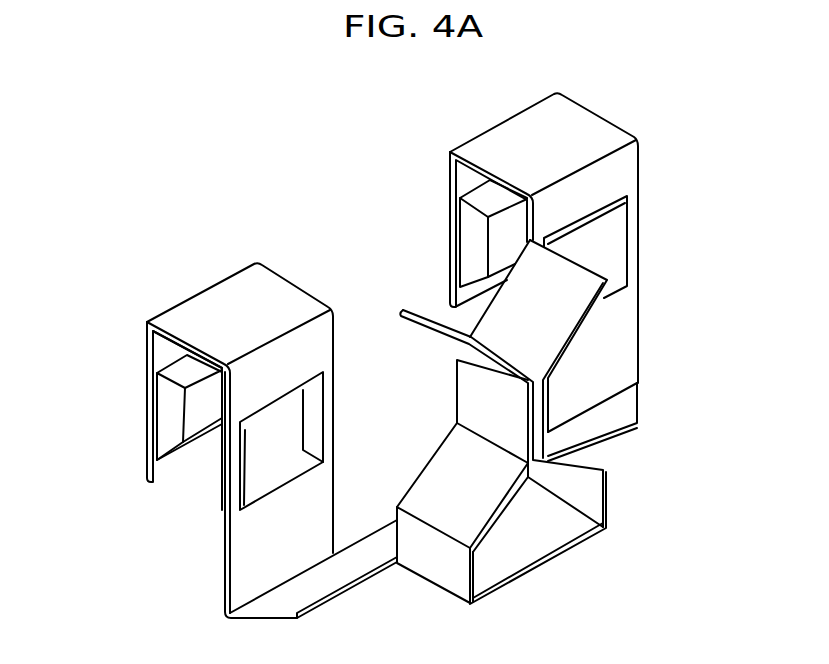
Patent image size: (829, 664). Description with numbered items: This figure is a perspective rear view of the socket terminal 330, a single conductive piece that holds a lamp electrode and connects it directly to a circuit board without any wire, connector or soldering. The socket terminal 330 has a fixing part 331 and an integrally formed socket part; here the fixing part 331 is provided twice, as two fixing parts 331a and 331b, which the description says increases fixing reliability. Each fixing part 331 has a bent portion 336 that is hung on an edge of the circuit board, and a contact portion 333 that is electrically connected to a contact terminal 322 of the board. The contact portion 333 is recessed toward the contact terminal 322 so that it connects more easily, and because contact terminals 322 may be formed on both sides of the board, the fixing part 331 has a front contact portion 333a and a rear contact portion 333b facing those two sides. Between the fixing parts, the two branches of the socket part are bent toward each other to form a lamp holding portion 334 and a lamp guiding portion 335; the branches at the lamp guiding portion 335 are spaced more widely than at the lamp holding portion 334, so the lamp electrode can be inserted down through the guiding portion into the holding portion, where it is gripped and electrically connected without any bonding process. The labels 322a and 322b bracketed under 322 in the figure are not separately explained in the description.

The socket terminal 330 is at (433, 94).
The fixing part 331 is at (364, 112).
The fixing part 331a is at (243, 277).
The fixing part 331b is at (478, 146).
The contact portion 333 is at (50, 433).
The front contact portion 333a is at (227, 458).
The rear contact portion 333b is at (170, 432).
The lamp holding portion 334 is at (562, 402).
The lamp guiding portion 335 is at (580, 256).
The bent portion 336 is at (172, 350).
The contact terminal 322 is at (738, 288).
The first elastic portion 322a is at (583, 300).
The second elastic portion 322b is at (458, 363).